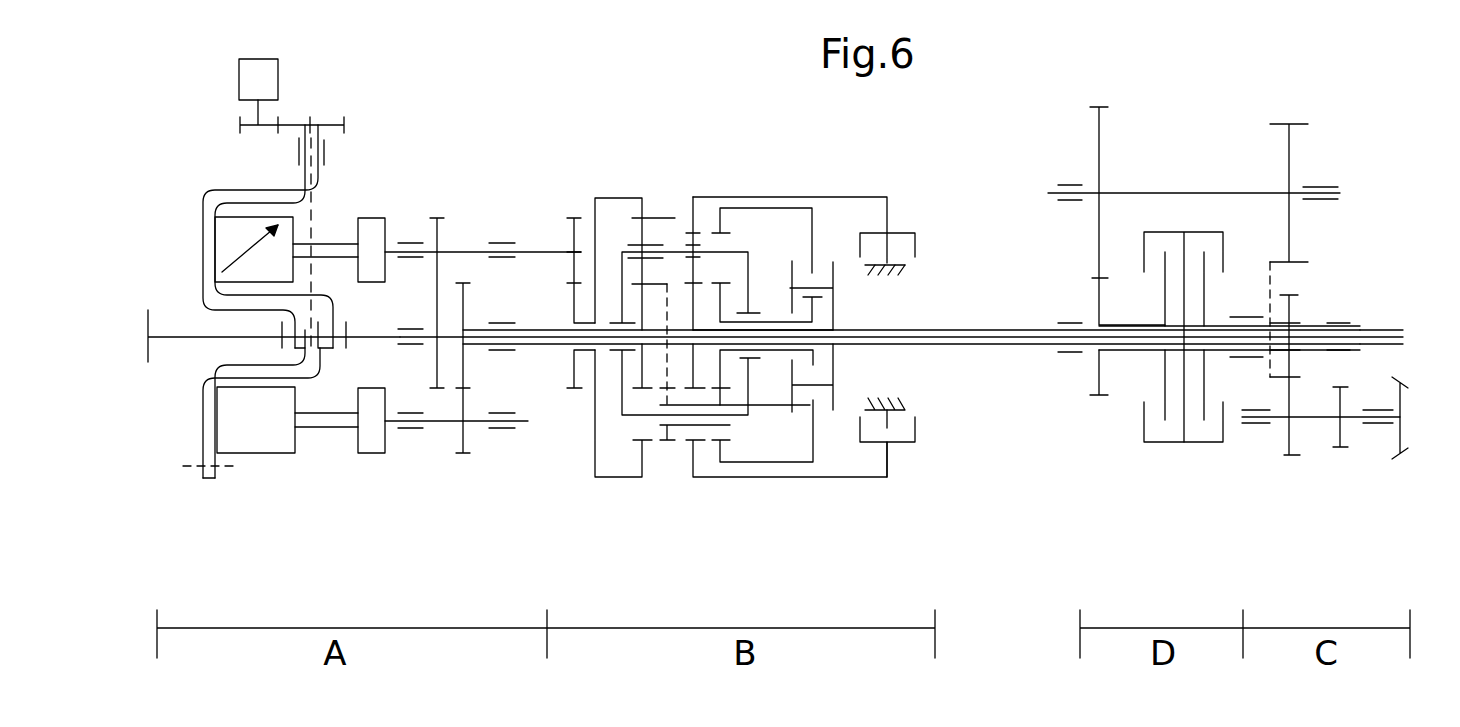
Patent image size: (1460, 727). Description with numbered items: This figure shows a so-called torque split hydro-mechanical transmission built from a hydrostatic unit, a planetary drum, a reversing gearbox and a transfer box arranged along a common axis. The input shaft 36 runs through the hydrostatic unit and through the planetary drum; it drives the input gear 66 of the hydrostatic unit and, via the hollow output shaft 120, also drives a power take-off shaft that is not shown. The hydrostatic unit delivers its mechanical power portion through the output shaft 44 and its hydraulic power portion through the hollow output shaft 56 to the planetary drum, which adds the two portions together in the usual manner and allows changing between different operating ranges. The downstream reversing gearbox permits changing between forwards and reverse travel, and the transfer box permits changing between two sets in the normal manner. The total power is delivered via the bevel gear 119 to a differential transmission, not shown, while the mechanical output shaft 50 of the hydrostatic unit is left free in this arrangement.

The input shaft 36 is at (175, 337).
The output shaft 44 is at (468, 250).
The input gear 66 is at (437, 295).
The hollow output shaft 56 is at (532, 329).
The mechanical output shaft 50 is at (473, 423).
The hollow output shaft 120 is at (1403, 337).
The bevel gear 119 is at (1406, 430).